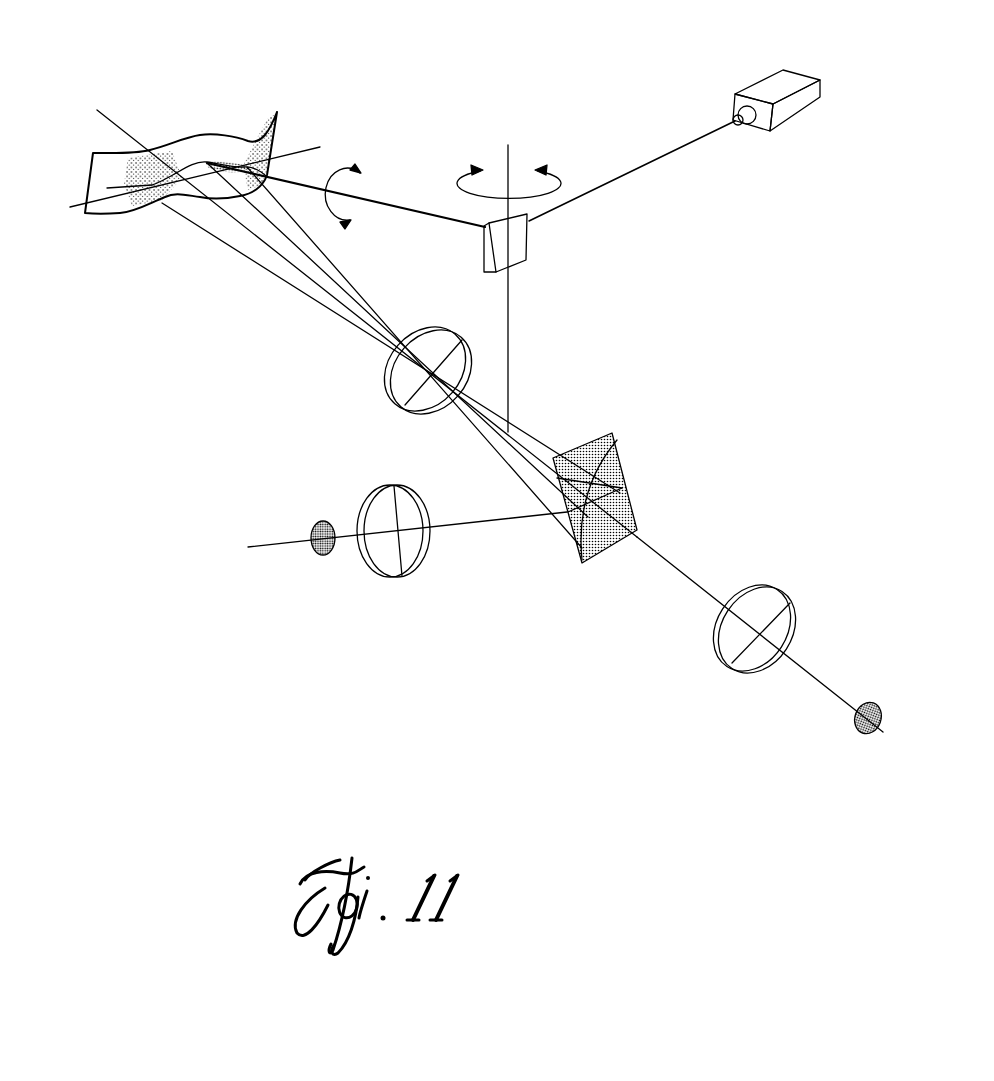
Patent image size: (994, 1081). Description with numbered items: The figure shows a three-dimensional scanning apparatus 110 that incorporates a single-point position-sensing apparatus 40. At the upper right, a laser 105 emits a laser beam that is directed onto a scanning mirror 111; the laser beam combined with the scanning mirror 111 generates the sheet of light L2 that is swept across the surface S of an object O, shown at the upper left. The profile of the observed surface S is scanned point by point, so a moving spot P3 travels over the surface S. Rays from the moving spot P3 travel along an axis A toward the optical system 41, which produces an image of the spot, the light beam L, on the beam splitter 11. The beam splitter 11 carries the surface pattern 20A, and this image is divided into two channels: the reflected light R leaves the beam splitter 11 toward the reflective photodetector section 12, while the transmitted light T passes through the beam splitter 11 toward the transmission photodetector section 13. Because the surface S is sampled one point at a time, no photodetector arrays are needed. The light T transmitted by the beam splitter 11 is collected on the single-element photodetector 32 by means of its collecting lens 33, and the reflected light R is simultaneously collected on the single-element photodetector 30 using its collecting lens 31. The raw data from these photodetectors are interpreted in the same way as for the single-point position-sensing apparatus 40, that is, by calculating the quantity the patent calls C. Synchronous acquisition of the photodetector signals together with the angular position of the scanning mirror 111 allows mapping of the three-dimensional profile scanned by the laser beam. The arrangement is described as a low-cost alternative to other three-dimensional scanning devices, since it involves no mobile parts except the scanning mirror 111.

The surface S is at (274, 140).
The object O is at (100, 240).
The moving spot P3 is at (162, 204).
The optical axis A is at (247, 230).
The transmission channel T is at (677, 565).
The light beam L is at (520, 455).
The sheet of light L2 is at (660, 158).
The 3-D scanning apparatus 110 is at (425, 172).
The scanning mirror 111 is at (513, 247).
The laser 105 is at (793, 107).
The optical system 41 is at (370, 402).
The position-sensing apparatus 40 is at (644, 508).
The beam splitter 11 is at (623, 507).
The surface pattern 20A is at (610, 550).
The reflective channel R is at (483, 522).
The reflective photodetector section 12 is at (340, 589).
The collecting lens 31 is at (417, 553).
The photodetector 30 is at (323, 552).
The transmission photodetector section 13 is at (792, 639).
The collecting lens 33 is at (758, 658).
The photodetector 32 is at (857, 730).